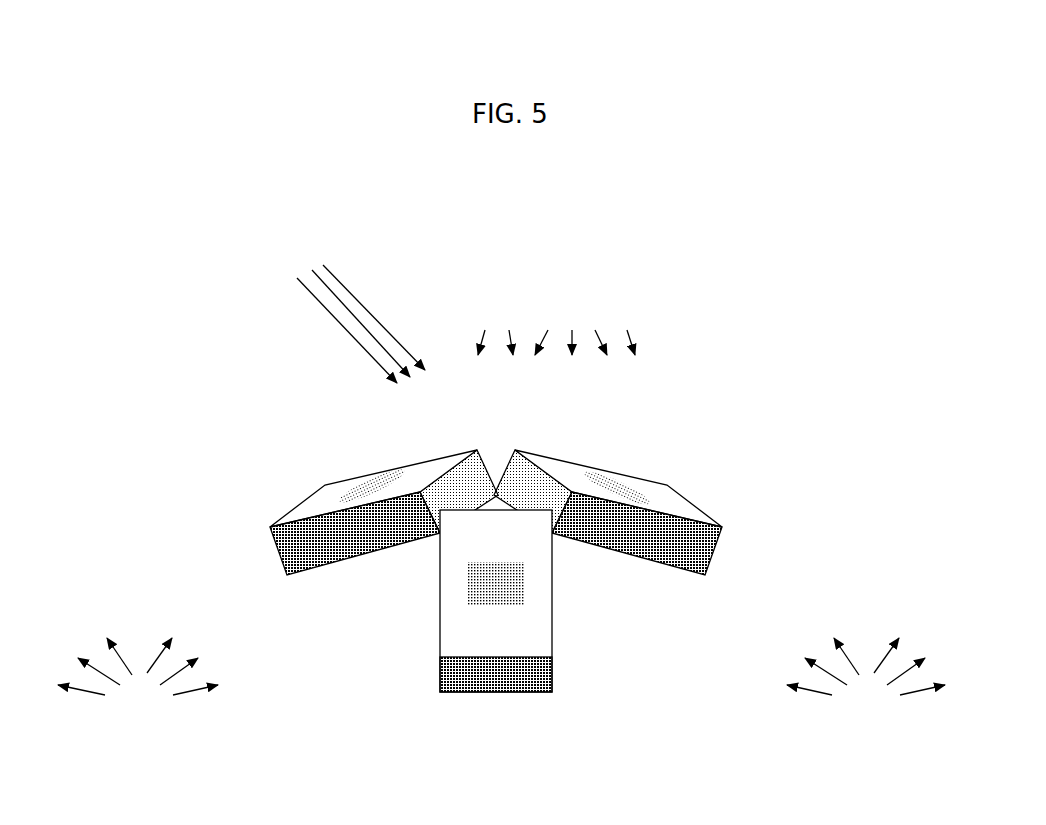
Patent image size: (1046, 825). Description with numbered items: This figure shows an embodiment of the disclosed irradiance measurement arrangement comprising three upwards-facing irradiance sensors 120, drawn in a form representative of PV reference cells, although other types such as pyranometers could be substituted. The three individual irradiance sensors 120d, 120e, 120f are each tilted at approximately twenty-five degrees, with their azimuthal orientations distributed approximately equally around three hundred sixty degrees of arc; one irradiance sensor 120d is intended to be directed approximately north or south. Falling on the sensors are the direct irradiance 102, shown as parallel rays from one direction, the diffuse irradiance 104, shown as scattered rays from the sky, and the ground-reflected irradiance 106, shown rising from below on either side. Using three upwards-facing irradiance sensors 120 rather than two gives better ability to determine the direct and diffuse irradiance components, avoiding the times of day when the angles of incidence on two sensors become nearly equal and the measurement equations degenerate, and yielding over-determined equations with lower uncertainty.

The direct irradiance 102 is at (370, 221).
The diffuse irradiance 104 is at (650, 298).
The ground-reflected irradiance 106 is at (223, 599).
The irradiance sensors 120 is at (498, 620).
The irradiance sensor 120d is at (682, 492).
The irradiance sensor 120e is at (562, 605).
The irradiance sensor 120f is at (308, 487).